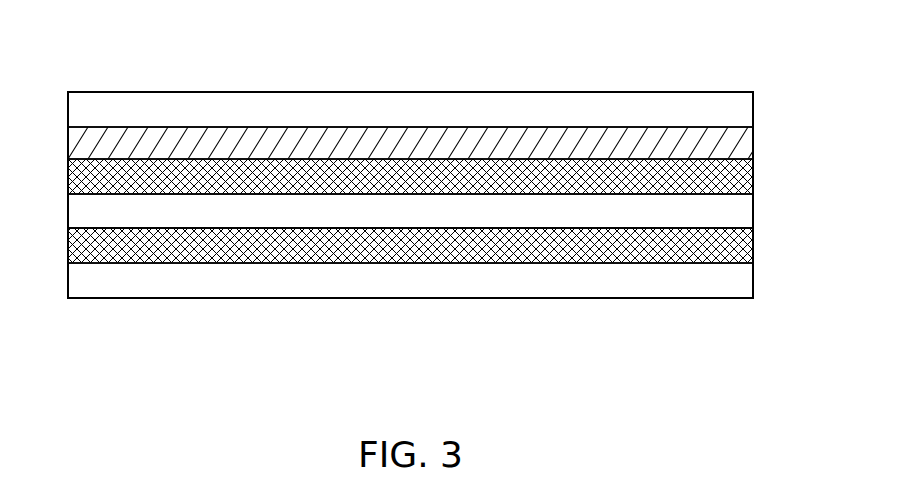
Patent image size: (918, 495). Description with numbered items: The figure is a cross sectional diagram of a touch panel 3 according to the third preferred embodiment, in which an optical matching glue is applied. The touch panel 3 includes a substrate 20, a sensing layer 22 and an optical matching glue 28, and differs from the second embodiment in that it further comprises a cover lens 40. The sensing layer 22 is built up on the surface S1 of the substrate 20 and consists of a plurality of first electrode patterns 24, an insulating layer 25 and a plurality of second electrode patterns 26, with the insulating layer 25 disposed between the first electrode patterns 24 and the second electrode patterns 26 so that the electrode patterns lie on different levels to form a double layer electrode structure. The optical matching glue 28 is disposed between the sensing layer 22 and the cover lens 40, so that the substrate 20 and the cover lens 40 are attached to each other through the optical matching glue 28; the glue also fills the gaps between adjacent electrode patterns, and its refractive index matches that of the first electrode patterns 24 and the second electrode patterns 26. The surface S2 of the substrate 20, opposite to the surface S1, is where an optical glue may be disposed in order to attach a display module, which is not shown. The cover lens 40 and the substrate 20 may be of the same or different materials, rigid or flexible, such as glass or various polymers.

The touch panel 3 is at (648, 46).
The cover lens 40 is at (742, 104).
The optical matching glue 28 is at (742, 143).
The second electrode patterns 26 is at (746, 176).
The insulating layer 25 is at (742, 213).
The first electrode patterns 24 is at (746, 246).
The substrate 20 is at (742, 279).
The sensing layer 22 is at (800, 162).
The surface S1 is at (70, 253).
The surface S2 is at (87, 298).